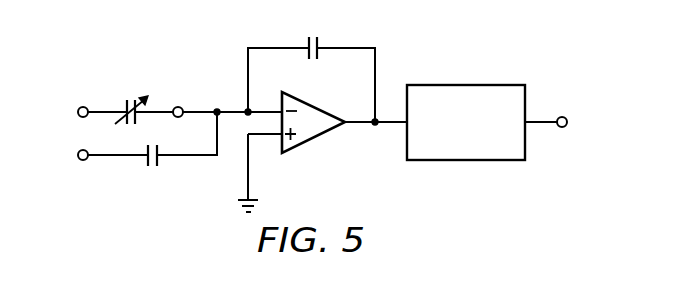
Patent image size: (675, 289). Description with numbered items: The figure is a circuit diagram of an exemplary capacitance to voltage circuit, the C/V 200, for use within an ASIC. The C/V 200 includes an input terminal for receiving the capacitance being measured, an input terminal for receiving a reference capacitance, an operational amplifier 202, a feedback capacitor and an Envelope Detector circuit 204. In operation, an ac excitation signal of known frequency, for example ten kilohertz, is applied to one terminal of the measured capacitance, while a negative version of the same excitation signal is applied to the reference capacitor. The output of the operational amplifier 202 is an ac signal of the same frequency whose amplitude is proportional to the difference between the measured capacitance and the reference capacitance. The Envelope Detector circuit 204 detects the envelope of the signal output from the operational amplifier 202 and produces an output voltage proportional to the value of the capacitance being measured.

The C/V 200 is at (548, 60).
The operational amplifier 202 is at (313, 140).
The Envelope Detector circuit 204 is at (465, 85).